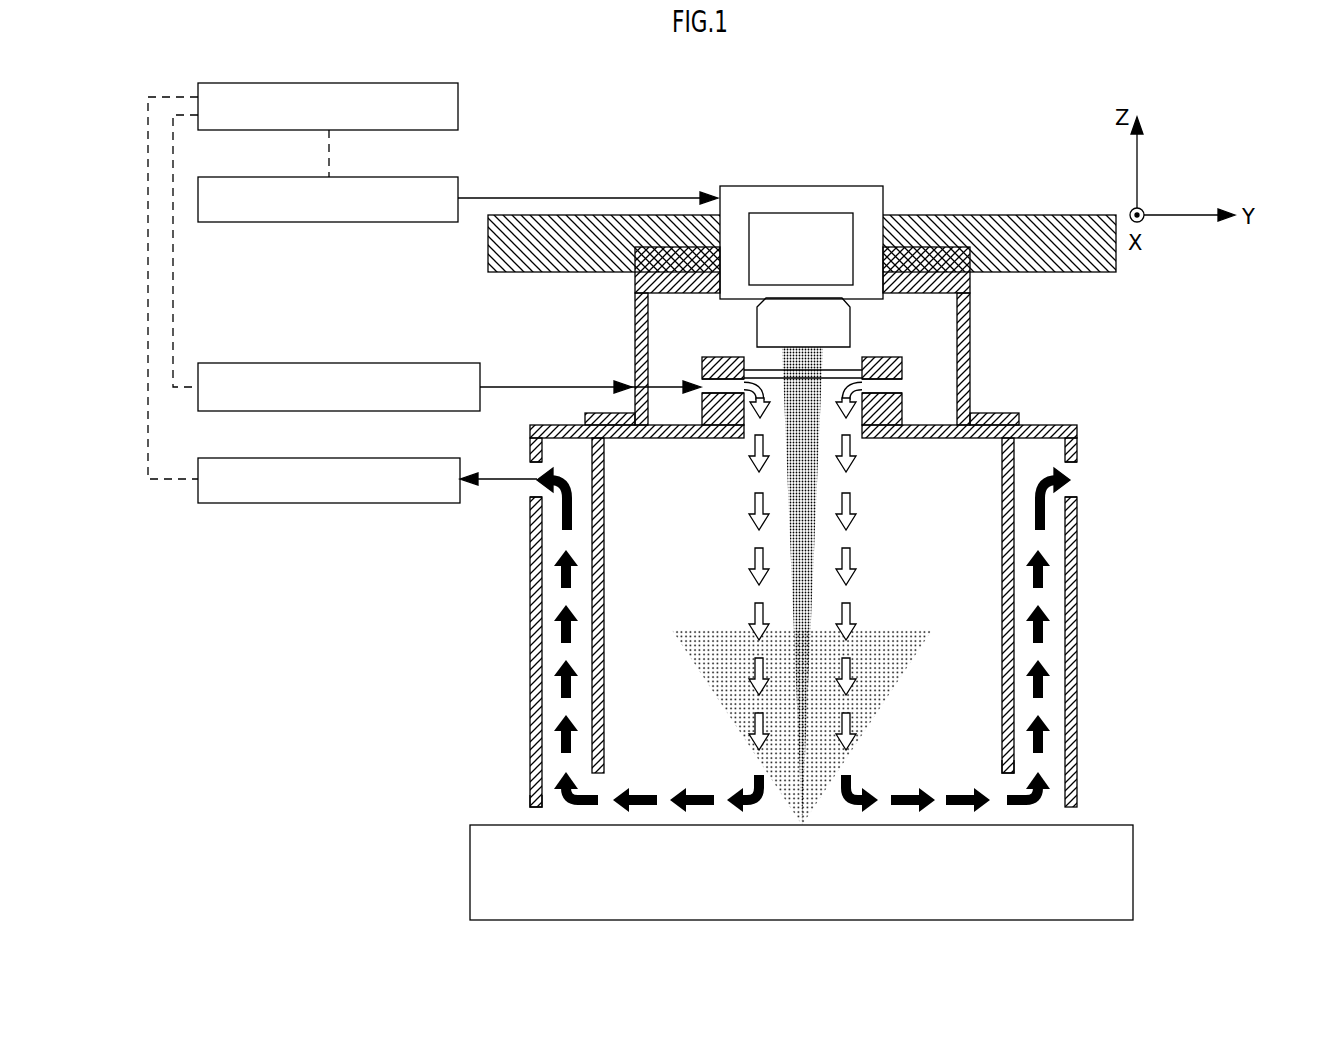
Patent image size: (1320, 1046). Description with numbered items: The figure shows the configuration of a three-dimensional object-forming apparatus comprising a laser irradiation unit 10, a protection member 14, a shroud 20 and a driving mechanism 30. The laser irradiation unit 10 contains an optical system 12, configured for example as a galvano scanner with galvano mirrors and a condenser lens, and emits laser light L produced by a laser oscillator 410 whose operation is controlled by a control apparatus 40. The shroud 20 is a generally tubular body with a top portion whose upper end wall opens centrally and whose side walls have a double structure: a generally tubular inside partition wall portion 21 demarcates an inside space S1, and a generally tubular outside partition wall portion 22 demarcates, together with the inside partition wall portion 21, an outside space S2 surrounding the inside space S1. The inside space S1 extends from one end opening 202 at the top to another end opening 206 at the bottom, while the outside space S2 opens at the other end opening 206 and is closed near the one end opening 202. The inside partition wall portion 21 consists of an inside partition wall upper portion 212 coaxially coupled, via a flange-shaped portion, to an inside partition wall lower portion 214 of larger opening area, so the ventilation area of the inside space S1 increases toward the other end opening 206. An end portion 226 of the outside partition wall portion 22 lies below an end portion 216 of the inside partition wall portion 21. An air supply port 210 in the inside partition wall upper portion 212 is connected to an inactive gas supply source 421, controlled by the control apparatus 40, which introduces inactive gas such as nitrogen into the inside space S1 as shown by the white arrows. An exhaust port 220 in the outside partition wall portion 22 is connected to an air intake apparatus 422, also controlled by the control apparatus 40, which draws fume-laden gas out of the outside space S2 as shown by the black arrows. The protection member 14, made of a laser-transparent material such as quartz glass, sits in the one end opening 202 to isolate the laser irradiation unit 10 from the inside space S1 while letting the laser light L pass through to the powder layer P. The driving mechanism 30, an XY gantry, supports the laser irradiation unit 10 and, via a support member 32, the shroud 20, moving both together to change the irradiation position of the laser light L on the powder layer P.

The laser irradiation unit 10 is at (859, 159).
The optical system 12 is at (778, 212).
The protection member 14 is at (756, 360).
The shroud 20 is at (1159, 355).
The inside partition wall portion 21 is at (1138, 368).
The outside partition wall portion 22 is at (528, 590).
The driving mechanism 30 is at (1049, 203).
The support member 32 is at (629, 382).
The control apparatus 40 is at (400, 84).
The one end opening 202 is at (854, 359).
The other end opening 206 is at (979, 812).
The air supply port 210 is at (903, 387).
The inside partition wall upper portion 212 is at (904, 418).
The inside partition wall lower portion 214 is at (1015, 543).
The end portion of inside partition wall portion 216 is at (1014, 773).
The exhaust port 220 is at (531, 472).
The end portion of outside partition wall portion 226 is at (528, 805).
The laser oscillator 410 is at (400, 178).
The inactive gas supply source 421 is at (398, 364).
The air intake apparatus 422 is at (398, 459).
The laser light L is at (815, 570).
The inside space S1 is at (932, 655).
The outside space S2 is at (1048, 719).
The powder layer P is at (1122, 819).